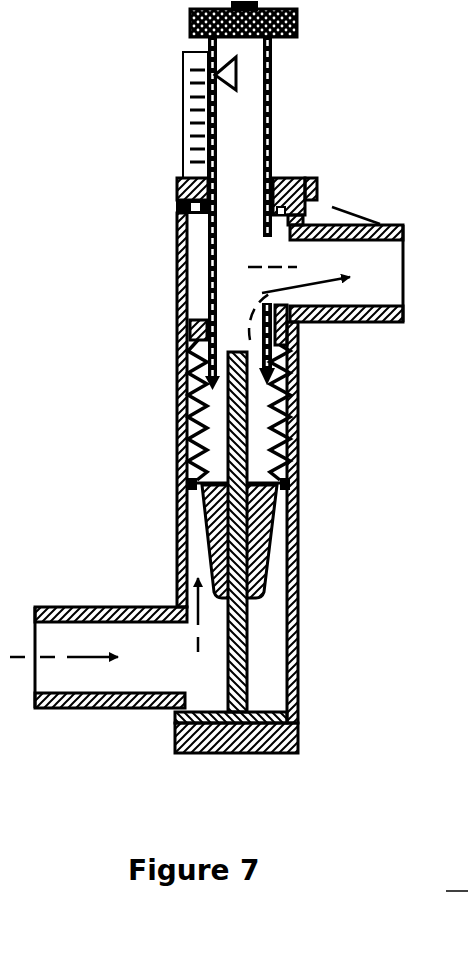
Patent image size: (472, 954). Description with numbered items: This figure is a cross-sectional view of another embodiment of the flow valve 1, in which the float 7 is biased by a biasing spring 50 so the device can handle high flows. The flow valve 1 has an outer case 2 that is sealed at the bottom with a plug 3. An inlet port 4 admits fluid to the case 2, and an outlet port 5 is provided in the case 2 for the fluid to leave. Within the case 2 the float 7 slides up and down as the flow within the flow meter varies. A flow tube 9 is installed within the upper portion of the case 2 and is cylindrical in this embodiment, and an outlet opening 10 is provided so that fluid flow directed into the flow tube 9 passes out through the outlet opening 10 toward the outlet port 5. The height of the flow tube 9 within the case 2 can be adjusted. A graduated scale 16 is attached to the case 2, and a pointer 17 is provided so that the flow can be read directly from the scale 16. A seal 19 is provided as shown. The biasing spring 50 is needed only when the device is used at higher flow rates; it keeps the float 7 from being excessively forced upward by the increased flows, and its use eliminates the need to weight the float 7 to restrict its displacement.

The flow valve 1 is at (106, 289).
The outer case 2 is at (175, 400).
The plug 3 is at (298, 746).
The inlet port 4 is at (26, 632).
The outlet port 5 is at (387, 270).
The float 7 is at (262, 533).
The flow tube 9 is at (272, 112).
The outlet opening 10 is at (299, 298).
The graduated scale 16 is at (182, 98).
The pointer 17 is at (236, 92).
The seal 19 is at (263, 710).
The biasing spring 50 is at (286, 428).